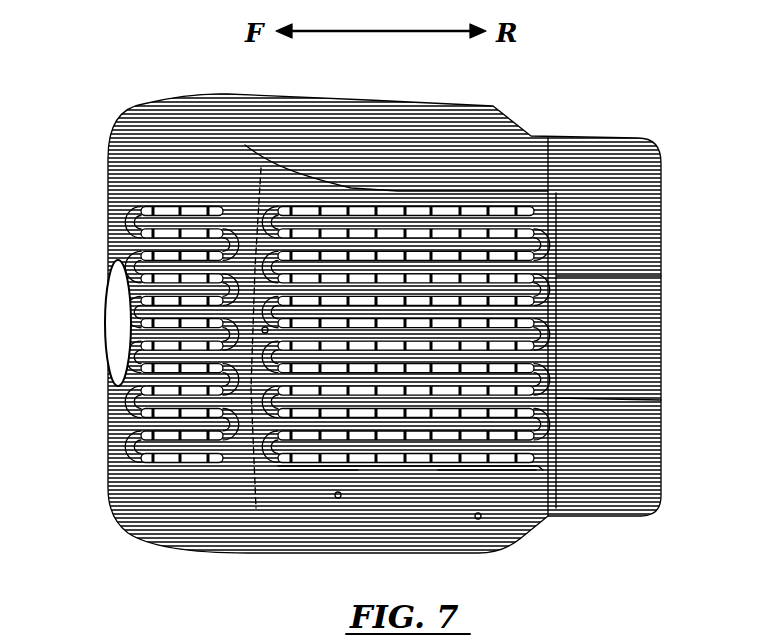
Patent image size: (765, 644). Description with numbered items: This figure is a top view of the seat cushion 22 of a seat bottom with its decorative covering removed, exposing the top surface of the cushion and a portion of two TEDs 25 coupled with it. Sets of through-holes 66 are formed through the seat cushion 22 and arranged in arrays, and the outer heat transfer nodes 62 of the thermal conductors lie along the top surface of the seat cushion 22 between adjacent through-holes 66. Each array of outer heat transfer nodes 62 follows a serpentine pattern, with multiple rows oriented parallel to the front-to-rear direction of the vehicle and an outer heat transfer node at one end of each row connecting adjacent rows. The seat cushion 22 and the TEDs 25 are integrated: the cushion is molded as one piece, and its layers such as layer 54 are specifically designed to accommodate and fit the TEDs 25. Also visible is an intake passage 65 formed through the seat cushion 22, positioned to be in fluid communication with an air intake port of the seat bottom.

The seat cushion 22 is at (583, 130).
The layer of the seat cushion 54 is at (630, 207).
The TED 25 is at (275, 196).
The intake passage 65 is at (100, 312).
The through-holes 66 is at (282, 452).
The outer heat transfer nodes 62 is at (437, 452).